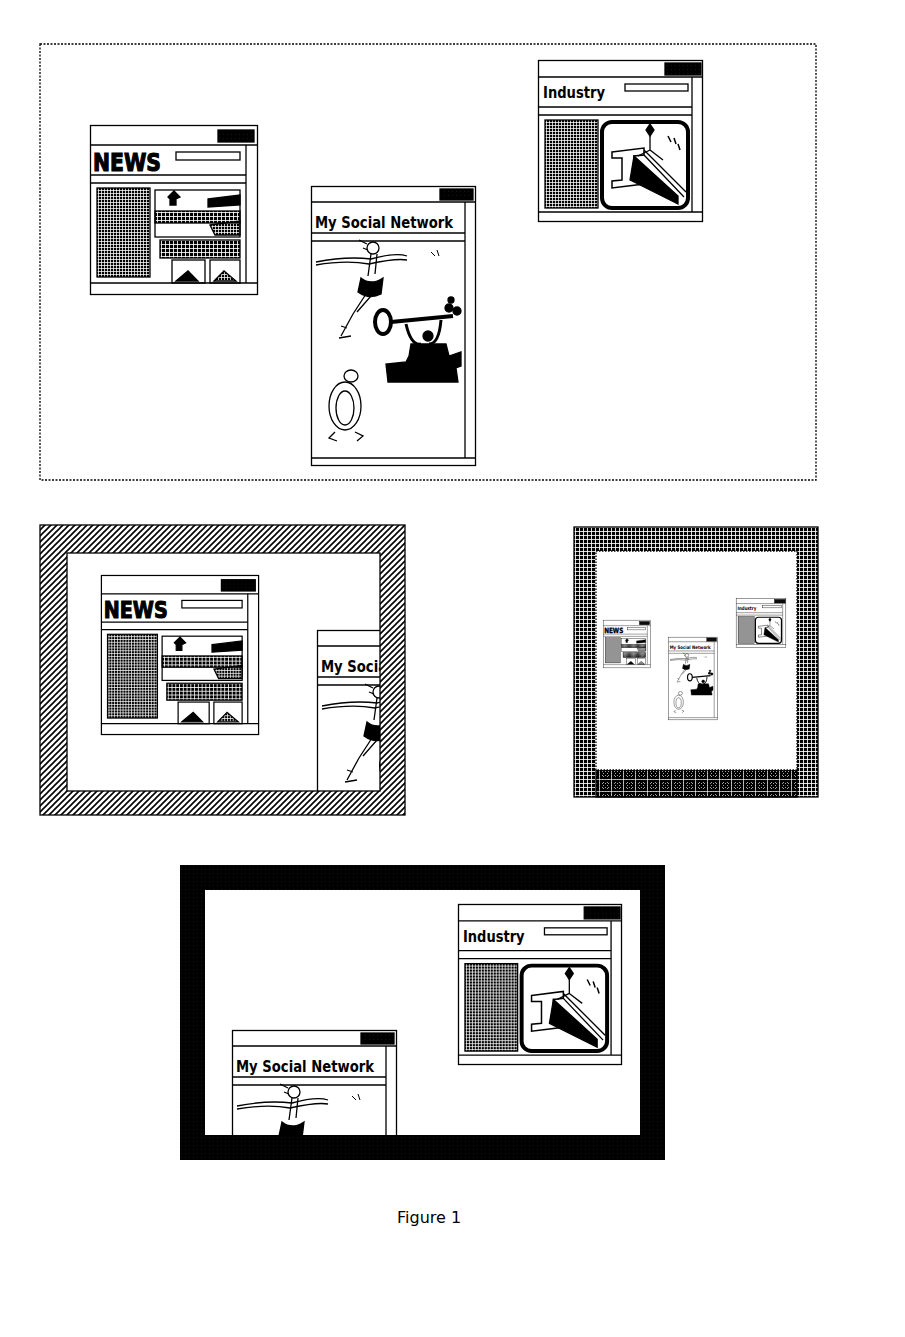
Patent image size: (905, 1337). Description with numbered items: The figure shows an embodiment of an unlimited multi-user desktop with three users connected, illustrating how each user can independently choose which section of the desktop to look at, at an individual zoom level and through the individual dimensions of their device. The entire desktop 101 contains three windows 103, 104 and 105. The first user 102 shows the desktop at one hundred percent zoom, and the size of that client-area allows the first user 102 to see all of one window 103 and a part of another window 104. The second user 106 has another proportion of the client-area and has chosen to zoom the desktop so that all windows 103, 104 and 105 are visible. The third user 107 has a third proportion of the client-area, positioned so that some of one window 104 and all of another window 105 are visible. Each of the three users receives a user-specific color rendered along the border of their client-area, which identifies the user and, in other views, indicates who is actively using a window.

The desktop 101 is at (215, 80).
The first user 102 is at (148, 812).
The window 103 is at (254, 160).
The window 104 is at (467, 405).
The window 105 is at (695, 174).
The second user 106 is at (685, 790).
The third user 107 is at (282, 1135).